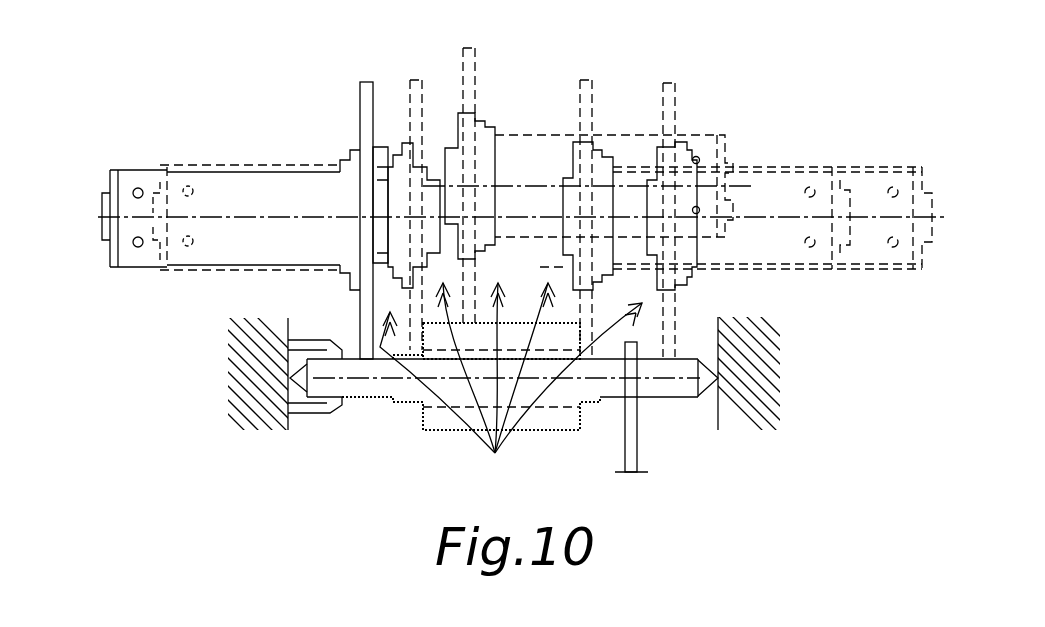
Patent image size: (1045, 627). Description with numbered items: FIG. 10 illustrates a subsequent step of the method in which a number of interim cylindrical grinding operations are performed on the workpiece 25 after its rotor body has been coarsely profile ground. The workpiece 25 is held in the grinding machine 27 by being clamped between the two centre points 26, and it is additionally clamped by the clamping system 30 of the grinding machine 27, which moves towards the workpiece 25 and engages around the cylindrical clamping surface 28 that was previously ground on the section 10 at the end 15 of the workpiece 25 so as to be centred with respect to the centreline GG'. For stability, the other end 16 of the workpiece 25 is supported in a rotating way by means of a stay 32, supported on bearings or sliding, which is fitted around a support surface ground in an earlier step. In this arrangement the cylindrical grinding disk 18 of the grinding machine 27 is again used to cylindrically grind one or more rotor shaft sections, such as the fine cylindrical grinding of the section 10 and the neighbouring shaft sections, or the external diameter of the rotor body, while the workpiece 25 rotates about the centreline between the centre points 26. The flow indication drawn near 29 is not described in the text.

The section 10 is at (356, 419).
The end 15 is at (172, 373).
The other end 16 is at (842, 378).
The cylindrical grinding disk 18 is at (668, 83).
The workpiece 25 is at (522, 292).
The centre points 26 is at (292, 368).
The grinding machine 27 is at (757, 417).
The cylindrical clamping surface 28 is at (374, 404).
The gas flow streams 29 is at (511, 385).
The clamping system 30 is at (307, 413).
The stay 32 is at (625, 417).